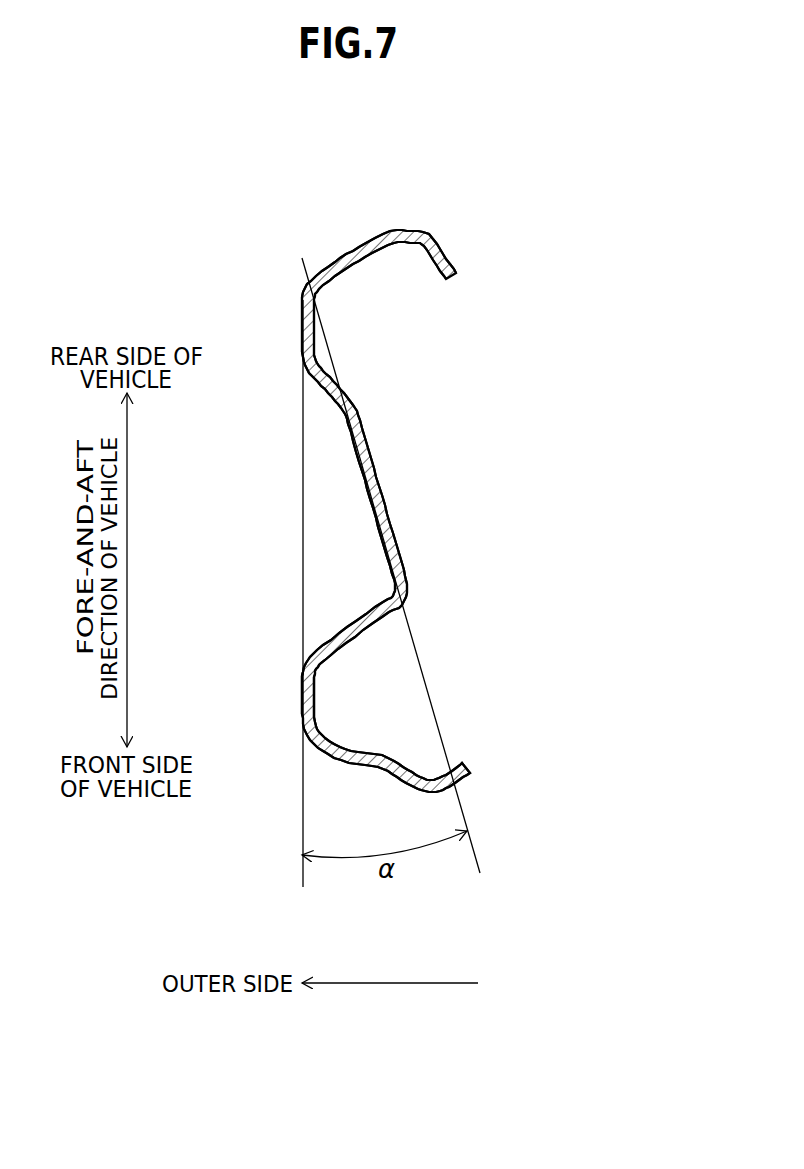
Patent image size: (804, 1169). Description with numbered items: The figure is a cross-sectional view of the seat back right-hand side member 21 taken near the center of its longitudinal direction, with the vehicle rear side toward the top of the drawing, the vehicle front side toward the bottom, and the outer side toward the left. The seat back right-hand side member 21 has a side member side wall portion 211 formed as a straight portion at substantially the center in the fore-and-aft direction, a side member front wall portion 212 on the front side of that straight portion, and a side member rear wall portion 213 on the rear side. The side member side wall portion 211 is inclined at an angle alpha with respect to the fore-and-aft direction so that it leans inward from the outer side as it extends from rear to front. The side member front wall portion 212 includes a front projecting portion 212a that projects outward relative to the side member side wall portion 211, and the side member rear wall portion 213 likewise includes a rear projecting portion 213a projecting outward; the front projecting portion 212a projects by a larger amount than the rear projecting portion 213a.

The seat back right-hand side member 21 is at (273, 233).
The side member side wall portion 211 is at (377, 472).
The side member front wall portion 212 is at (273, 652).
The front projecting portion 212a is at (300, 693).
The side member rear wall portion 213 is at (273, 320).
The rear projecting portion 213a is at (300, 338).